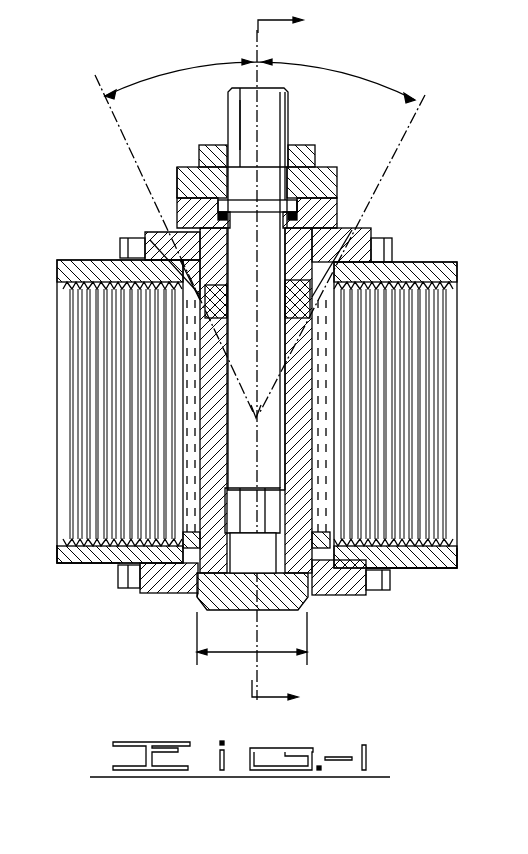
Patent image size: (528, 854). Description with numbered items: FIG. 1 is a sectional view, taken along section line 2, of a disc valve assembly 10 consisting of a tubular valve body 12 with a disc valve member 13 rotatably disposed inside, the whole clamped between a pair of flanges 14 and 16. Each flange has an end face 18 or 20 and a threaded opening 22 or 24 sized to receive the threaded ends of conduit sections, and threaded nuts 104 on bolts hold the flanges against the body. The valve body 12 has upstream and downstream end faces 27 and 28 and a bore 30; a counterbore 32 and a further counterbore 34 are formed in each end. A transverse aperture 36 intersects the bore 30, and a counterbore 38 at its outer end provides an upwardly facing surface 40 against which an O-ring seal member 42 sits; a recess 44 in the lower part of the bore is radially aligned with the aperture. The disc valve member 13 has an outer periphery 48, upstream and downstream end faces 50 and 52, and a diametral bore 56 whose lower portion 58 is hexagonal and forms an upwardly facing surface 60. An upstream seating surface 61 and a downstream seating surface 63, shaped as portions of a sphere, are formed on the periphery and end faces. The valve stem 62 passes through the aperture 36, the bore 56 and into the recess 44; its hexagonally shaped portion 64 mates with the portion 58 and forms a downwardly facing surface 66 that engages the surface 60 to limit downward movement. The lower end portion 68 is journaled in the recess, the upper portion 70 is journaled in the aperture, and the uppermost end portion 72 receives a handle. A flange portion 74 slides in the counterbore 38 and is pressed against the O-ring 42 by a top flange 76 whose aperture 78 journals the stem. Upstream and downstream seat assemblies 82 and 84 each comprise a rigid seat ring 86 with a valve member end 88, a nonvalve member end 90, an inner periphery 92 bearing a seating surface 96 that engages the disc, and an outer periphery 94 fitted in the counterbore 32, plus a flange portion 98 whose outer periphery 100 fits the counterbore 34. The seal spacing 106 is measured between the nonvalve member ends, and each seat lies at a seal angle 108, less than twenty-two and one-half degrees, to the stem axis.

The section line 2- 2 is at (284, 360).
The disc valve assembly 10 is at (296, 120).
The valve body 12 is at (306, 612).
The disc valve member 13 is at (320, 413).
The flange 14 is at (68, 563).
The flange 16 is at (450, 570).
The end face 18 is at (198, 598).
The end face 20 is at (335, 598).
The threaded opening 22 is at (65, 532).
The threaded opening 24 is at (456, 300).
The upstream end face 27 is at (192, 566).
The downstream end face 28 is at (313, 587).
The bore 30 is at (228, 503).
The counterbore 32 is at (202, 520).
The counterbore 34 is at (198, 540).
The aperture 36 is at (205, 245).
The counterbore 38 is at (222, 191).
The upwardly facing surface 40 is at (298, 212).
The O-ring seal member 42 is at (338, 197).
The recess 44 is at (222, 612).
The outer periphery 48 is at (290, 295).
The upstream end face 50 is at (198, 360).
The downstream end face 52 is at (308, 378).
The bore 56 is at (227, 366).
The lower portion 58 is at (254, 490).
The upwardly facing surface 60 is at (313, 479).
The upstream seating surface 61 is at (190, 262).
The valve stem 62 is at (318, 349).
The downstream seating surface 63 is at (312, 300).
The hexagonally shaped portion 64 is at (279, 488).
The downwardly facing surface 66 is at (255, 510).
The lower end portion 68 is at (262, 610).
The upper portion 70 is at (352, 228).
The uppermost end portion 72 is at (272, 104).
The flange portion 74 is at (295, 200).
The top flange 76 is at (178, 190).
The aperture 78 is at (236, 166).
The upstream seat assembly 82 is at (200, 320).
The downstream seat assembly 84 is at (289, 310).
The seat ring 86 is at (281, 232).
The valve member end 88 is at (234, 270).
The nonvalve member end 90 is at (214, 272).
The inner periphery 92 is at (198, 310).
The outer periphery 94 is at (221, 583).
The seating surface 96 is at (290, 316).
The flange portion 98 is at (304, 287).
The outer periphery 100 is at (318, 572).
The threaded nut 104 is at (128, 242).
The seal spacing 106 is at (249, 657).
The seal angle 108 is at (204, 66).